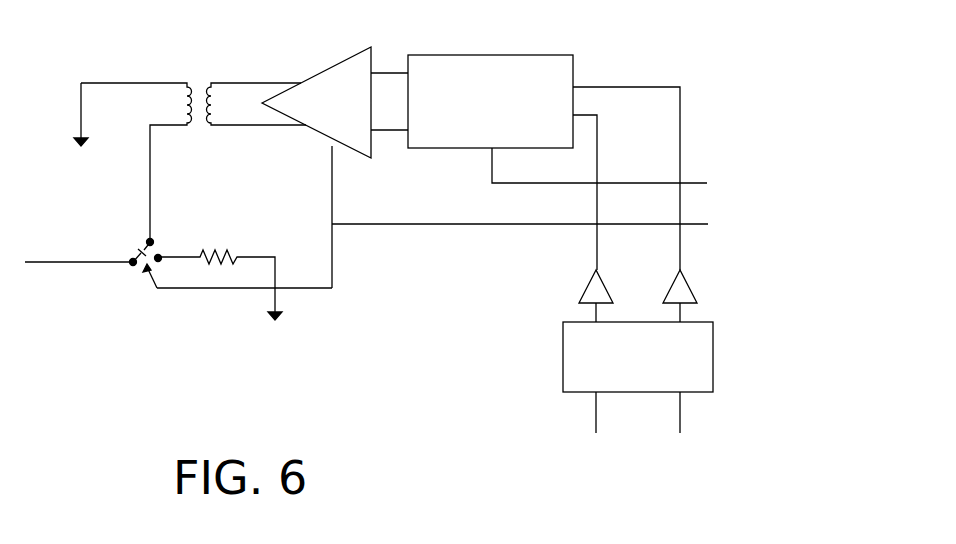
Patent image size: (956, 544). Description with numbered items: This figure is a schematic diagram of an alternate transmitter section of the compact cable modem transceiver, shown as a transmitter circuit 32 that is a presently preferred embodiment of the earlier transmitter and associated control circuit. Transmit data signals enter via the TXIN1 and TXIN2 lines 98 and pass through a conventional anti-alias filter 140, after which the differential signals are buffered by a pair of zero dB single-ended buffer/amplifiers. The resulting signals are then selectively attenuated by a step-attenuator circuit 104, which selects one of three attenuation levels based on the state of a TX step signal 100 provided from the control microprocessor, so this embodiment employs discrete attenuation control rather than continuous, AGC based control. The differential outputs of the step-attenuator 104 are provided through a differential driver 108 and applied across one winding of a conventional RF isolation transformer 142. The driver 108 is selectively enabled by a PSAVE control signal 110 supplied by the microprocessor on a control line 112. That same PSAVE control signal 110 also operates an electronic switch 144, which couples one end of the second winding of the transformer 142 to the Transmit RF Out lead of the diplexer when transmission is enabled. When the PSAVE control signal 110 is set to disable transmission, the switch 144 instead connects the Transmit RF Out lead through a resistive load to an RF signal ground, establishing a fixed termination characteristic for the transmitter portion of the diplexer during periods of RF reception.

The RF isolation transformer 142 is at (193, 70).
The differential driver 108 is at (320, 133).
The step-attenuator circuit 104 is at (516, 52).
The TX step signal 100 is at (823, 178).
The PSAVE control signal 110 is at (830, 220).
The control line 112 is at (437, 226).
The electronic switch 144 is at (131, 300).
The transmitter circuit 32 is at (342, 349).
The anti-alias filter 140 is at (717, 353).
The TXIN1 and TXIN2 lines 98 is at (686, 467).